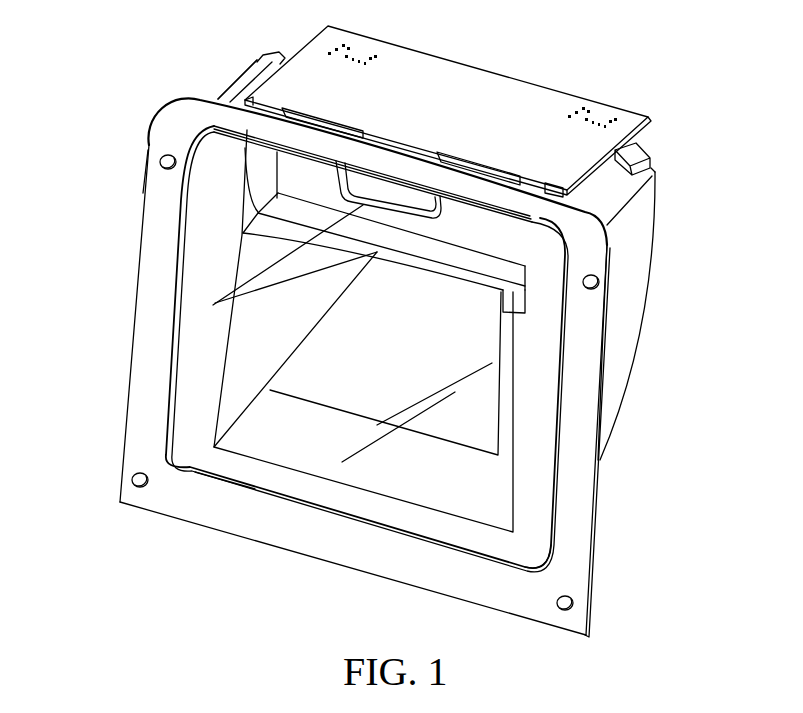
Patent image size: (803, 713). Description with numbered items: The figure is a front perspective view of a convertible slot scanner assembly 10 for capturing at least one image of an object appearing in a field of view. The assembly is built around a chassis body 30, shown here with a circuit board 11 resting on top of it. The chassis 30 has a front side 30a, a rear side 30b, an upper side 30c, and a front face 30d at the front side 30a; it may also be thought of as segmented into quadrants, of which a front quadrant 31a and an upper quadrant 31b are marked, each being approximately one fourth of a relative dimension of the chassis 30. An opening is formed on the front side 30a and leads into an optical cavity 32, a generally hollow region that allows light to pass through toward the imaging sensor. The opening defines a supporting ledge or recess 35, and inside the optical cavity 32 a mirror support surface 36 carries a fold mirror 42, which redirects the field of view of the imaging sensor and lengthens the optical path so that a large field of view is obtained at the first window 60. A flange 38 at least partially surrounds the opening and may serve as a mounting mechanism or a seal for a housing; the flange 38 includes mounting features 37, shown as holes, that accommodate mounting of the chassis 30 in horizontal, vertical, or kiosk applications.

The convertible slot scanner assembly 10 is at (101, 428).
The circuit board 11 is at (487, 72).
The chassis body 30 is at (575, 492).
The front side 30a is at (272, 557).
The rear side 30b is at (665, 142).
The upper side 30c is at (213, 75).
The front face 30d is at (580, 363).
The front quadrant 31a is at (180, 62).
The upper quadrant 31b is at (163, 100).
The optical cavity 32 is at (450, 488).
The supporting ledge 35 is at (517, 574).
The mirror support surface 36 is at (272, 377).
The mounting features 37 is at (572, 604).
The flange 38 is at (273, 62).
The fold mirror 42 is at (487, 397).
The first window 60 is at (270, 460).